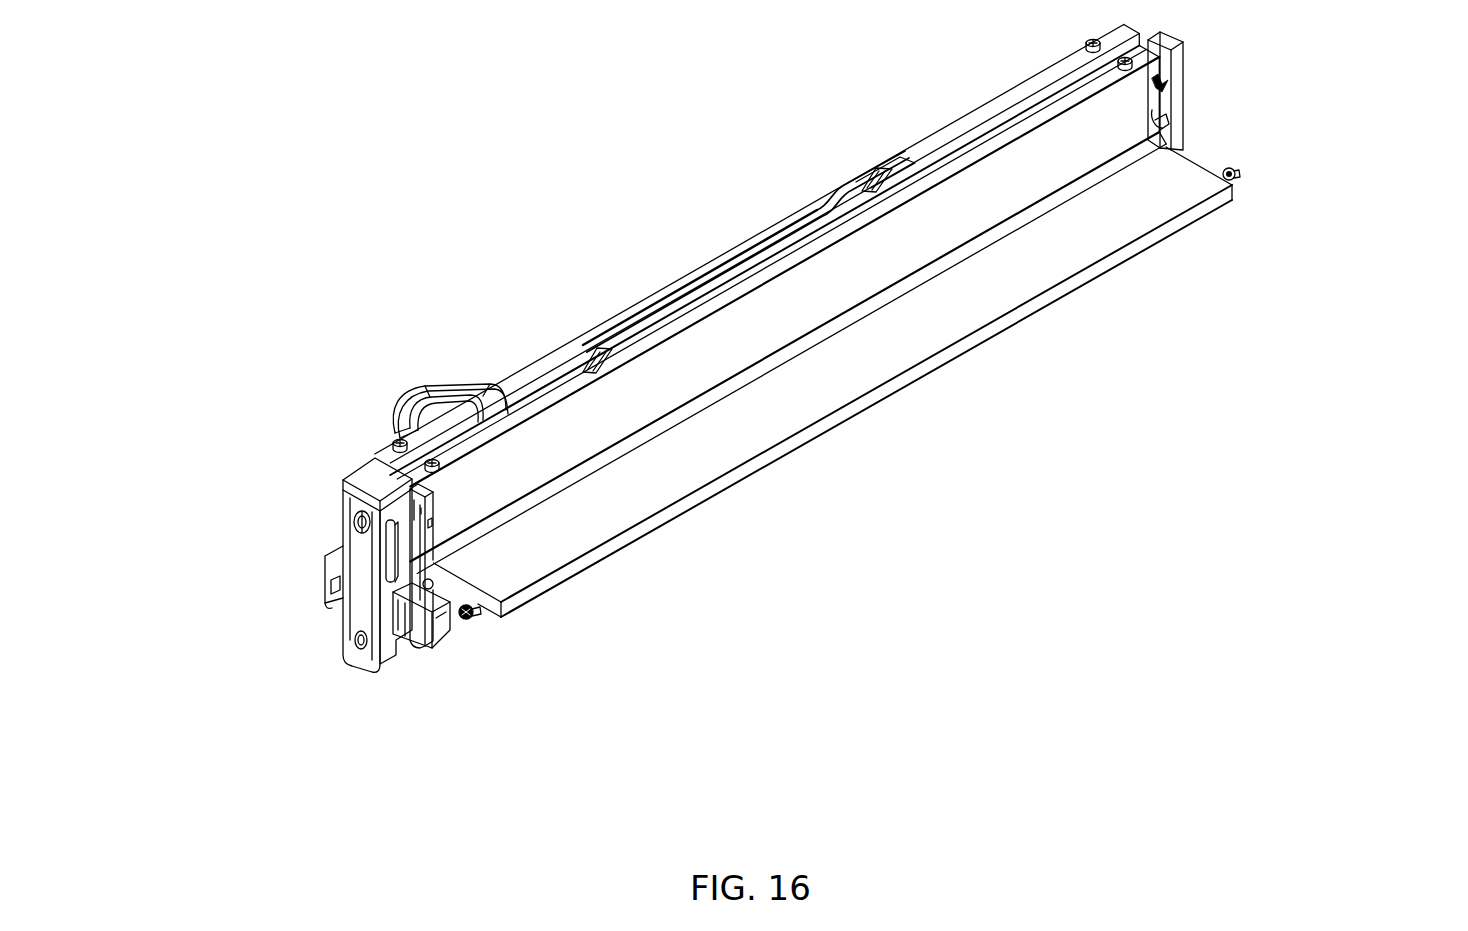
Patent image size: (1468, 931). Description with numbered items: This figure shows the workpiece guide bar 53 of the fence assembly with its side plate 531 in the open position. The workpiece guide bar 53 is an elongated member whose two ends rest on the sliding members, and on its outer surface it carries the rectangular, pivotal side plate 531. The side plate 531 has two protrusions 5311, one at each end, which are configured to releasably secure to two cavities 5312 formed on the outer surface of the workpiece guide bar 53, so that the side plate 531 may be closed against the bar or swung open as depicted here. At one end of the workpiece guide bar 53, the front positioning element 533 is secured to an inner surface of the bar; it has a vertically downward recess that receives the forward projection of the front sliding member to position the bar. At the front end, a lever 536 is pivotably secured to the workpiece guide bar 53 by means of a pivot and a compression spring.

The workpiece guide bar 53 is at (757, 320).
The side plate 531 is at (905, 342).
The protrusions 5311 is at (465, 620).
The cavities 5312 is at (400, 492).
The front positioning element 533 is at (328, 572).
The lever 536 is at (363, 612).